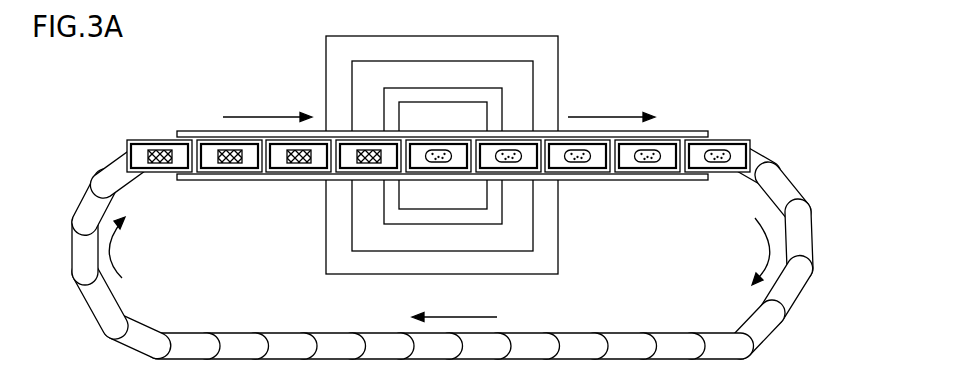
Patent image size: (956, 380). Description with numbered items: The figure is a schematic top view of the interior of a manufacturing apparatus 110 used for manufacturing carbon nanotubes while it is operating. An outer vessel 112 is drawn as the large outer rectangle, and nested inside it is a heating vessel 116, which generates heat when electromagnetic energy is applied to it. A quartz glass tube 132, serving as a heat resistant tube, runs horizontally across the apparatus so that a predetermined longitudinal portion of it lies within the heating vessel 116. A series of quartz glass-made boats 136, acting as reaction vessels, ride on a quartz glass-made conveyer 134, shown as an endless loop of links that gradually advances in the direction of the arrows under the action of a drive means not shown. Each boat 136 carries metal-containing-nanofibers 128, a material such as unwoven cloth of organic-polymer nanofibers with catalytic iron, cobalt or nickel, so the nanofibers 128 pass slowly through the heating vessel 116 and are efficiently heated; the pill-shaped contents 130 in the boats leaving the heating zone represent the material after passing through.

The manufacturing apparatus 110 is at (667, 65).
The outer vessel 112 is at (559, 60).
The heating vessel 116 is at (384, 210).
The metal-containing-nanofibers 128 is at (233, 165).
The processed substrate 130 is at (650, 163).
The quartz glass tube 132 is at (685, 130).
The quartz glass-made conveyer 134 is at (660, 332).
The quartz glass-made boat 136 is at (738, 138).